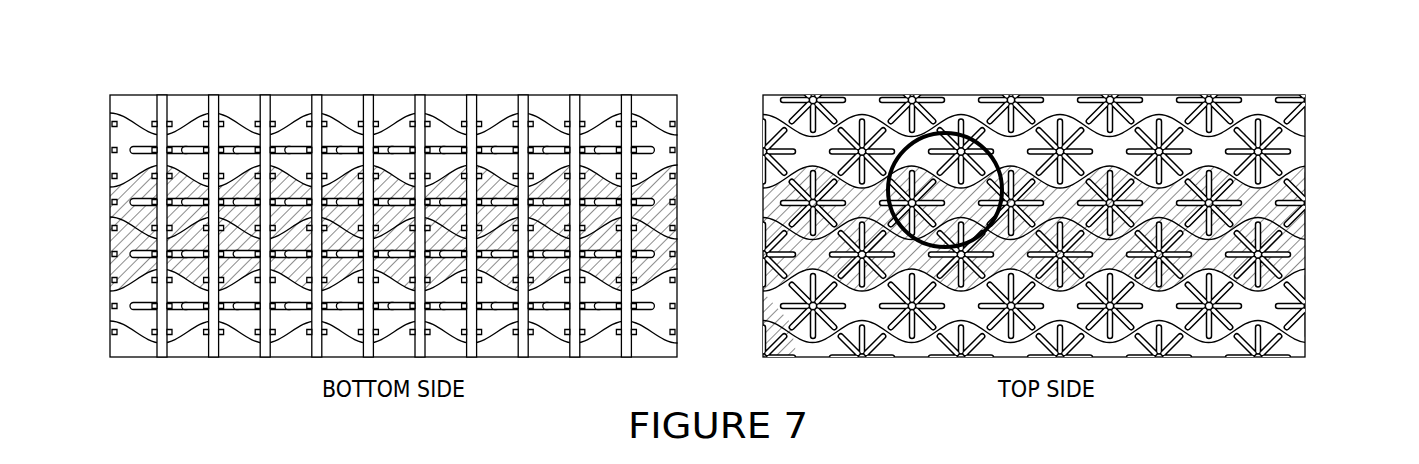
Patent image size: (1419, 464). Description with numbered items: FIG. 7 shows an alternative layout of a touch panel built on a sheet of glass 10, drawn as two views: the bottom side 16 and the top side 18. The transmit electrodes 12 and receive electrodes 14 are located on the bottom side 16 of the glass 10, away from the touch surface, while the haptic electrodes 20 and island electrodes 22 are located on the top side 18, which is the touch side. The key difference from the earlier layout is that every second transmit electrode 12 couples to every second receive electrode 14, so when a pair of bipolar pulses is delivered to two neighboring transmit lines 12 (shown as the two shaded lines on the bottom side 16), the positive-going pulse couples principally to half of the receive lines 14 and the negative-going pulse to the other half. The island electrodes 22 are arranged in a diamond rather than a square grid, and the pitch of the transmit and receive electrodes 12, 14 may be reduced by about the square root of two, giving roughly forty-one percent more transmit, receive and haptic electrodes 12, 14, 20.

The glass 10 is at (709, 223).
The transmit electrodes 12 is at (150, 270).
The receive electrodes 14 is at (150, 124).
The bottom side 16 is at (365, 254).
The top side 18 is at (1049, 241).
The haptic electrodes 20 is at (1280, 238).
The island electrodes 22 is at (1290, 162).